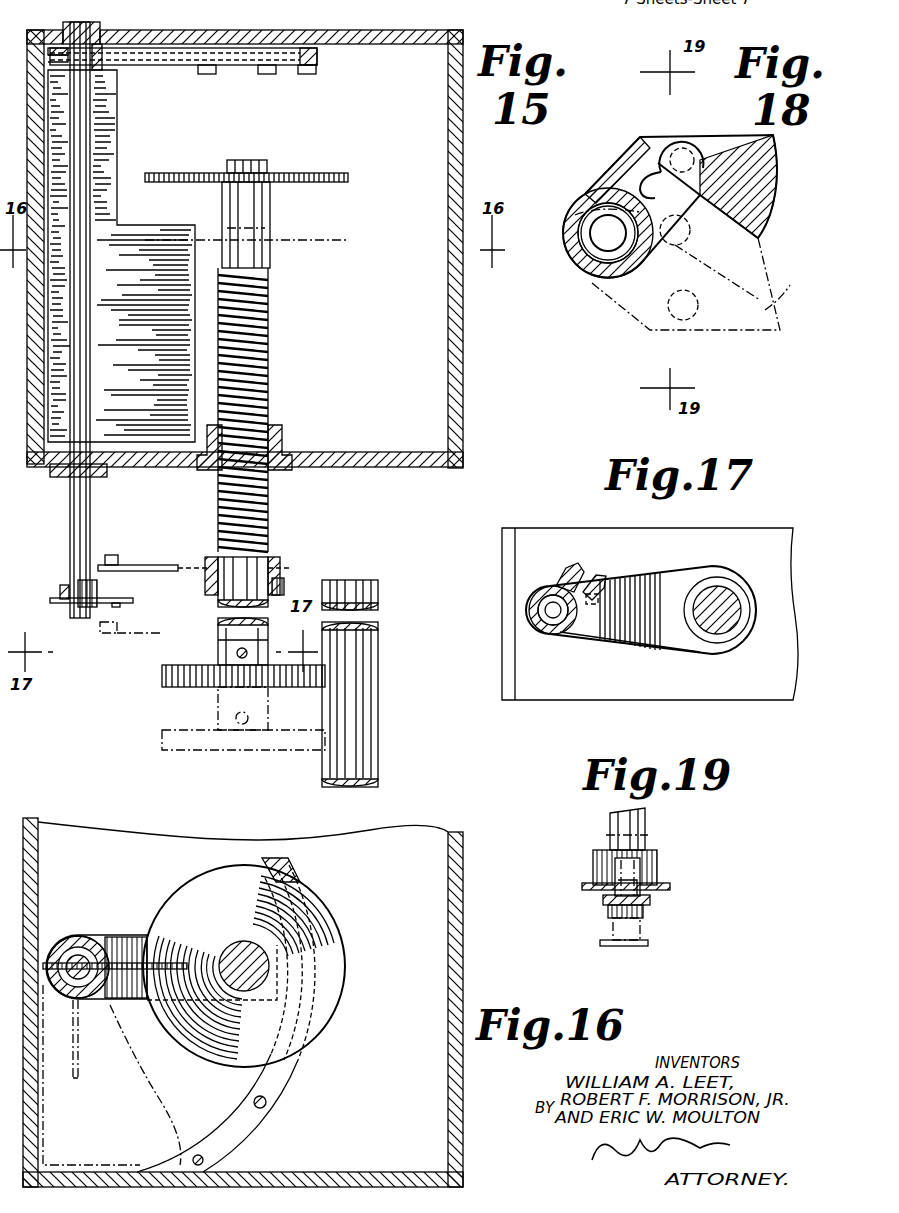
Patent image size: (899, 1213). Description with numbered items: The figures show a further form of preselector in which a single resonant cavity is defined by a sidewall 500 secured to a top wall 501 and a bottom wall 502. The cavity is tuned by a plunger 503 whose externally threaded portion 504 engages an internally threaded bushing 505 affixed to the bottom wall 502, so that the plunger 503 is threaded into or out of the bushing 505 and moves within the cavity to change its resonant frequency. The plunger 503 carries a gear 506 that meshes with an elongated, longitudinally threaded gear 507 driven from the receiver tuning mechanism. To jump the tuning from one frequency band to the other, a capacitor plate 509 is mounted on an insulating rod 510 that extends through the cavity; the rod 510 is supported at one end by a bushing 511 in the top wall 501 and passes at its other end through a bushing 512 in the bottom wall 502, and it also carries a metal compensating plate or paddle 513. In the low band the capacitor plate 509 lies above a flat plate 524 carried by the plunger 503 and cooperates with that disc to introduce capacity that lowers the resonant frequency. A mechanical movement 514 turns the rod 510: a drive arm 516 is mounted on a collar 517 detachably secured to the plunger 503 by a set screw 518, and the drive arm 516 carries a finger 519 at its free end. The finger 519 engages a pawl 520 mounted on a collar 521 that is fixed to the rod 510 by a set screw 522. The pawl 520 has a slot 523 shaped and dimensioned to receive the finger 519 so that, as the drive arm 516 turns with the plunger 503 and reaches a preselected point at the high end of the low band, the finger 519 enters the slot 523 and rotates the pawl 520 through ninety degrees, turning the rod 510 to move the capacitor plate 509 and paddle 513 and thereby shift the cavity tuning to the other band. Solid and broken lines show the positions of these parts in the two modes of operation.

In FIG. 15, the sidewall 500 is at (463, 300).
In FIG. 16, the sidewall 500 is at (465, 857).
In FIG. 15, the top wall 501 is at (367, 30).
In FIG. 16, the top wall 501 is at (412, 832).
In FIG. 15, the bottom wall 502 is at (365, 462).
In FIG. 17, the bottom wall 502 is at (556, 520).
In FIG. 15, the plunger 503 is at (297, 160).
In FIG. 15, the externally threaded portion 504 is at (262, 370).
In FIG. 16, the externally threaded portion 504 is at (262, 946).
In FIG. 17, the externally threaded portion 504 is at (712, 636).
In FIG. 15, the internally threaded bushing 505 is at (283, 442).
In FIG. 15, the gear 506 is at (162, 679).
In FIG. 15, the elongated, longitudinally threaded gear 507 is at (378, 664).
In FIG. 15, the capacitor plate 509 is at (222, 68).
In FIG. 16, the capacitor plate 509 is at (186, 886).
In FIG. 15, the insulating rod 510 is at (84, 300).
In FIG. 16, the insulating rod 510 is at (103, 934).
In FIG. 17, the insulating rod 510 is at (545, 608).
In FIG. 19, the insulating rod 510 is at (650, 816).
In FIG. 18, the insulating rod 510 is at (600, 233).
In FIG. 15, the bushing 511 is at (63, 25).
In FIG. 15, the bushing 512 is at (60, 478).
In FIG. 15, the compensating plate or paddle 513 is at (155, 228).
In FIG. 16, the compensating plate or paddle 513 is at (148, 962).
In FIG. 15, the mechanical movement 514 is at (163, 556).
In FIG. 17, the mechanical movement 514 is at (647, 556).
In FIG. 15, the drive arm 516 is at (160, 566).
In FIG. 17, the drive arm 516 is at (598, 633).
In FIG. 19, the drive arm 516 is at (652, 900).
In FIG. 18, the drive arm 516 is at (768, 170).
In FIG. 15, the collar 517 is at (274, 562).
In FIG. 17, the collar 517 is at (738, 588).
In FIG. 15, the set screw 518 is at (283, 586).
In FIG. 15, the finger 519 is at (112, 556).
In FIG. 17, the finger 519 is at (596, 600).
In FIG. 19, the finger 519 is at (622, 874).
In FIG. 18, the finger 519 is at (688, 150).
In FIG. 15, the pawl 520 is at (95, 600).
In FIG. 17, the pawl 520 is at (562, 572).
In FIG. 19, the pawl 520 is at (672, 886).
In FIG. 18, the pawl 520 is at (618, 168).
In FIG. 15, the collar 521 is at (70, 585).
In FIG. 17, the collar 521 is at (541, 617).
In FIG. 19, the collar 521 is at (660, 858).
In FIG. 18, the collar 521 is at (595, 210).
In FIG. 15, the set screw 522 is at (62, 594).
In FIG. 15, the slot 523 is at (120, 606).
In FIG. 17, the slot 523 is at (594, 574).
In FIG. 19, the slot 523 is at (618, 887).
In FIG. 18, the slot 523 is at (645, 150).
In FIG. 15, the flat plate 524 is at (214, 176).
In FIG. 16, the flat plate 524 is at (335, 950).